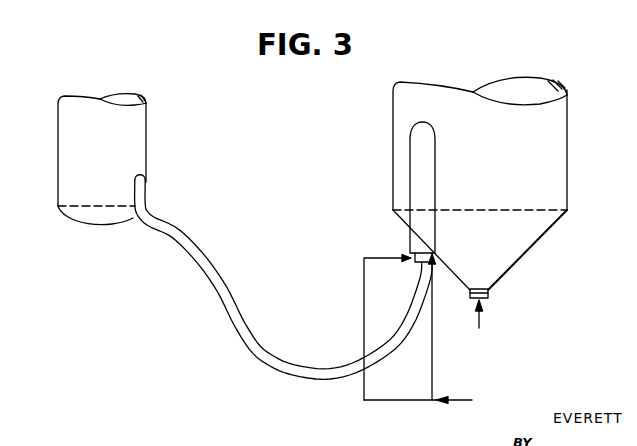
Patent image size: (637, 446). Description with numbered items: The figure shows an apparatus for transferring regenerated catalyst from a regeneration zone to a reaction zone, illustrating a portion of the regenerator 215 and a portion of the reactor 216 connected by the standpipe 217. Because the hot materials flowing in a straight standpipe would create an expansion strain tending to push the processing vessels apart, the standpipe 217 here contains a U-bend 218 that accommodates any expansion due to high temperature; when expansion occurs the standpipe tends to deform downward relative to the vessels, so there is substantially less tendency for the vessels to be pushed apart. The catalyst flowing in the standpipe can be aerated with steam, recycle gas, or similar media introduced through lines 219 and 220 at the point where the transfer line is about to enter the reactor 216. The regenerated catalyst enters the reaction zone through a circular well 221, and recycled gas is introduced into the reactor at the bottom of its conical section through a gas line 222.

The regenerator 215 is at (138, 149).
The reactor 216 is at (560, 151).
The standpipe 217 is at (199, 250).
The U-bend 218 is at (298, 373).
The line 219 is at (363, 310).
The line 220 is at (433, 370).
The circular well 221 is at (417, 170).
The gas line 222 is at (481, 313).